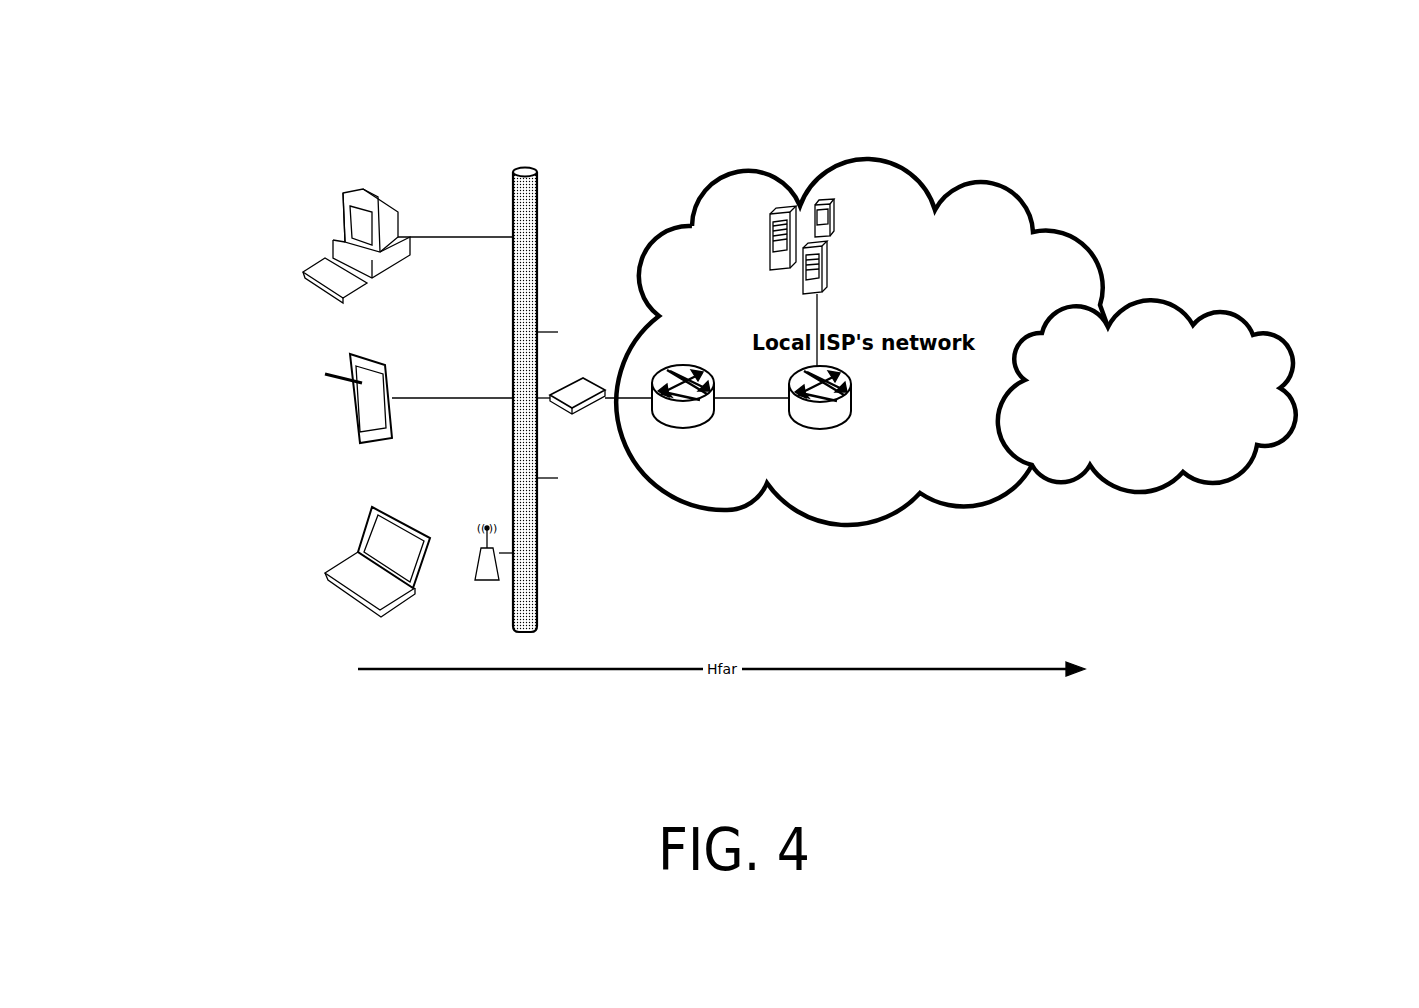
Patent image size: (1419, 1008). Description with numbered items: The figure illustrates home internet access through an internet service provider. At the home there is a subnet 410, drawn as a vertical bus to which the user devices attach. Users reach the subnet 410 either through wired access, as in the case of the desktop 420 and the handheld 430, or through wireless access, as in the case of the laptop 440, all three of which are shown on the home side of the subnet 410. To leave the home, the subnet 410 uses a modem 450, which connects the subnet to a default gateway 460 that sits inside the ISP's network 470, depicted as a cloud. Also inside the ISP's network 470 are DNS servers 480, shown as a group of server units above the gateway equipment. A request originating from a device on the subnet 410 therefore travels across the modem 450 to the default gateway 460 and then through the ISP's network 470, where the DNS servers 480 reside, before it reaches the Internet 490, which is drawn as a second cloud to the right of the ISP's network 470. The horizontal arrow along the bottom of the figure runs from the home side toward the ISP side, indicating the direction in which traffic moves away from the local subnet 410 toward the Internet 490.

The subnet 410 is at (540, 191).
The desktop 420 is at (340, 238).
The handheld 430 is at (350, 362).
The laptop 440 is at (360, 548).
The cable/DSL modem 450 is at (588, 440).
The default gateway 460 is at (683, 430).
The ISP's network 470 is at (828, 430).
The DNS servers 480 is at (835, 205).
The Internet 490 is at (1297, 428).